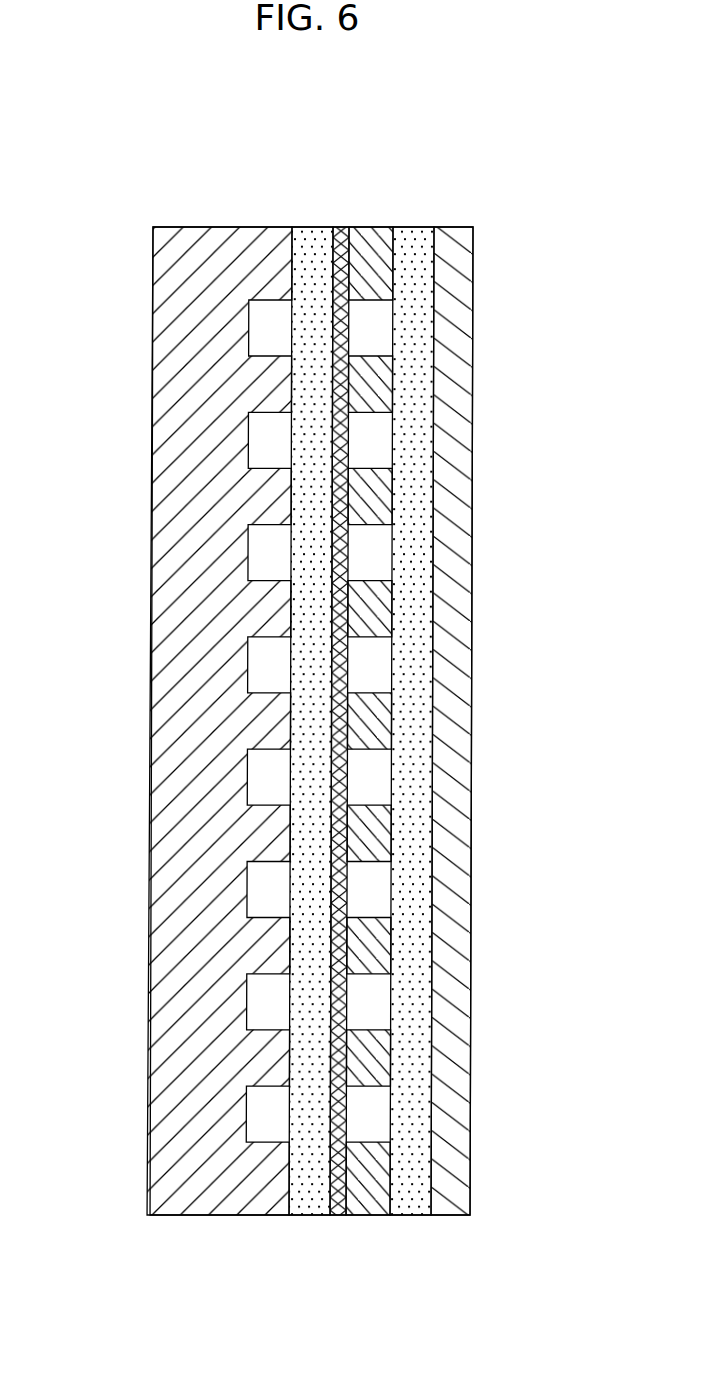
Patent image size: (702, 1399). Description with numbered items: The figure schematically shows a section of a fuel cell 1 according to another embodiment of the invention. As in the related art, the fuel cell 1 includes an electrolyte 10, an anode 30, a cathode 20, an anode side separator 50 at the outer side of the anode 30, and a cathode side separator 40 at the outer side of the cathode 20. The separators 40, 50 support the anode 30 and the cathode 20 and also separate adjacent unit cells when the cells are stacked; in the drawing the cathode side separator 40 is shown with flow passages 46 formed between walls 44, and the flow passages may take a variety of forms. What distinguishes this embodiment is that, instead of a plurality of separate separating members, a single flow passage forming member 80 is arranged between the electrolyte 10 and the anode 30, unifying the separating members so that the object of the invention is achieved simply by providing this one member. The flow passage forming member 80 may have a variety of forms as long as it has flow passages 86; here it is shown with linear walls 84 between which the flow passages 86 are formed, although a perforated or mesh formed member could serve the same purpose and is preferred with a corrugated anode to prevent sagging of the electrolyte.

The fuel cell 1 is at (421, 212).
The electrolyte 10 is at (341, 1224).
The cathode 20 is at (303, 1216).
The anode 30 is at (416, 1100).
The cathode side separator 40 is at (150, 884).
The wall 44 is at (260, 603).
The flow passage 46 is at (258, 1110).
The anode side separator 50 is at (459, 1015).
The flow passage forming member 80 is at (377, 1210).
The linear wall 84 is at (375, 830).
The flow passage 86 is at (375, 552).